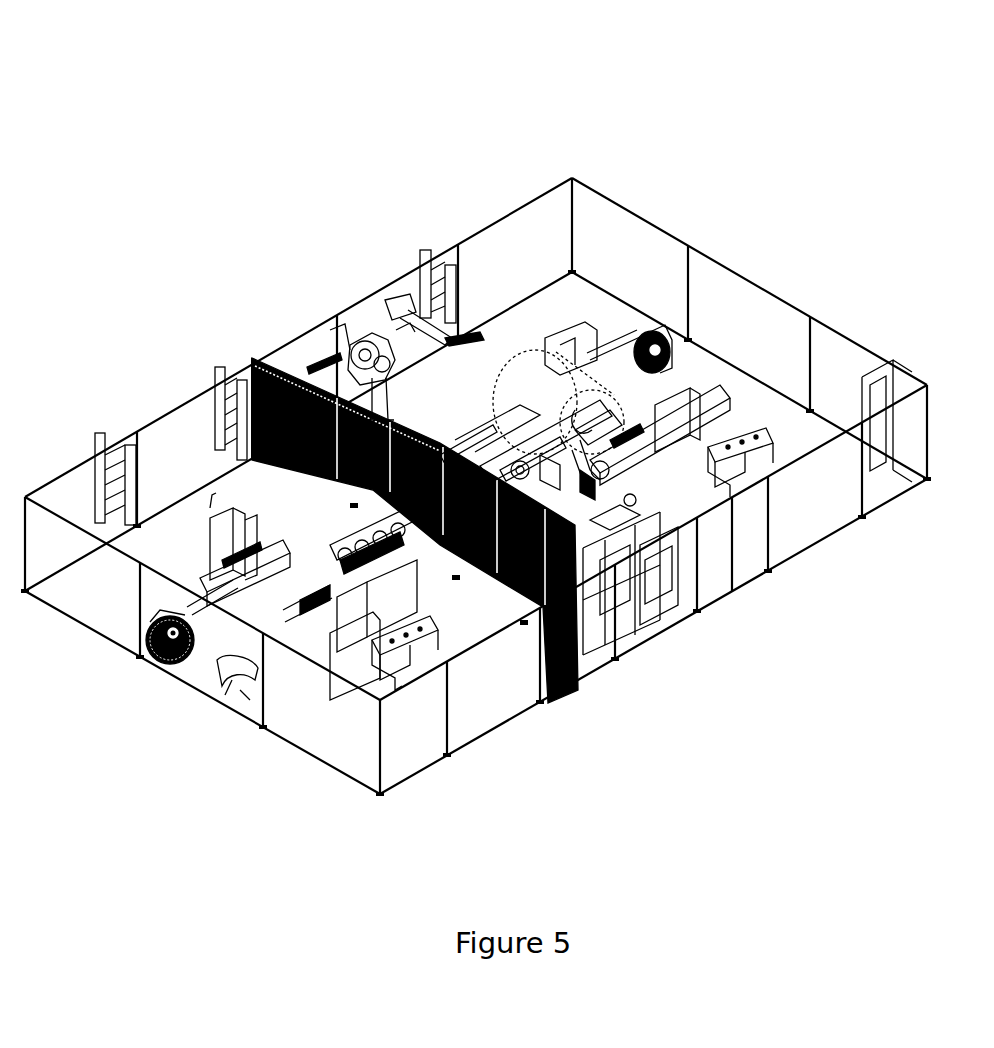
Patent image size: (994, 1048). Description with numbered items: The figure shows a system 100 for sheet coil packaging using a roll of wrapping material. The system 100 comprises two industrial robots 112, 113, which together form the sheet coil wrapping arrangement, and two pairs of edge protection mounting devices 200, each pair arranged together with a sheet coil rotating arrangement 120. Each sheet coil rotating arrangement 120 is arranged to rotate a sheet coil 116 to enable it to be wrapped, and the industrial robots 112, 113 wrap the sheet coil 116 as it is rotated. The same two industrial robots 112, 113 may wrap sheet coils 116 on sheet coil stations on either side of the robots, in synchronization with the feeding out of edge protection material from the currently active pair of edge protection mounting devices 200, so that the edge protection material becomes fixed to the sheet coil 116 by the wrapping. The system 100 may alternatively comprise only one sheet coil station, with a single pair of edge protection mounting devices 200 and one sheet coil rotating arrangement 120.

The system for sheet coil packaging 100 is at (512, 56).
The industrial robot 112 is at (588, 490).
The industrial robot 113 is at (380, 320).
The sheet coil 116 is at (558, 402).
The sheet coil rotating arrangement 120 is at (605, 466).
The edge protection mounting device 200 is at (198, 708).